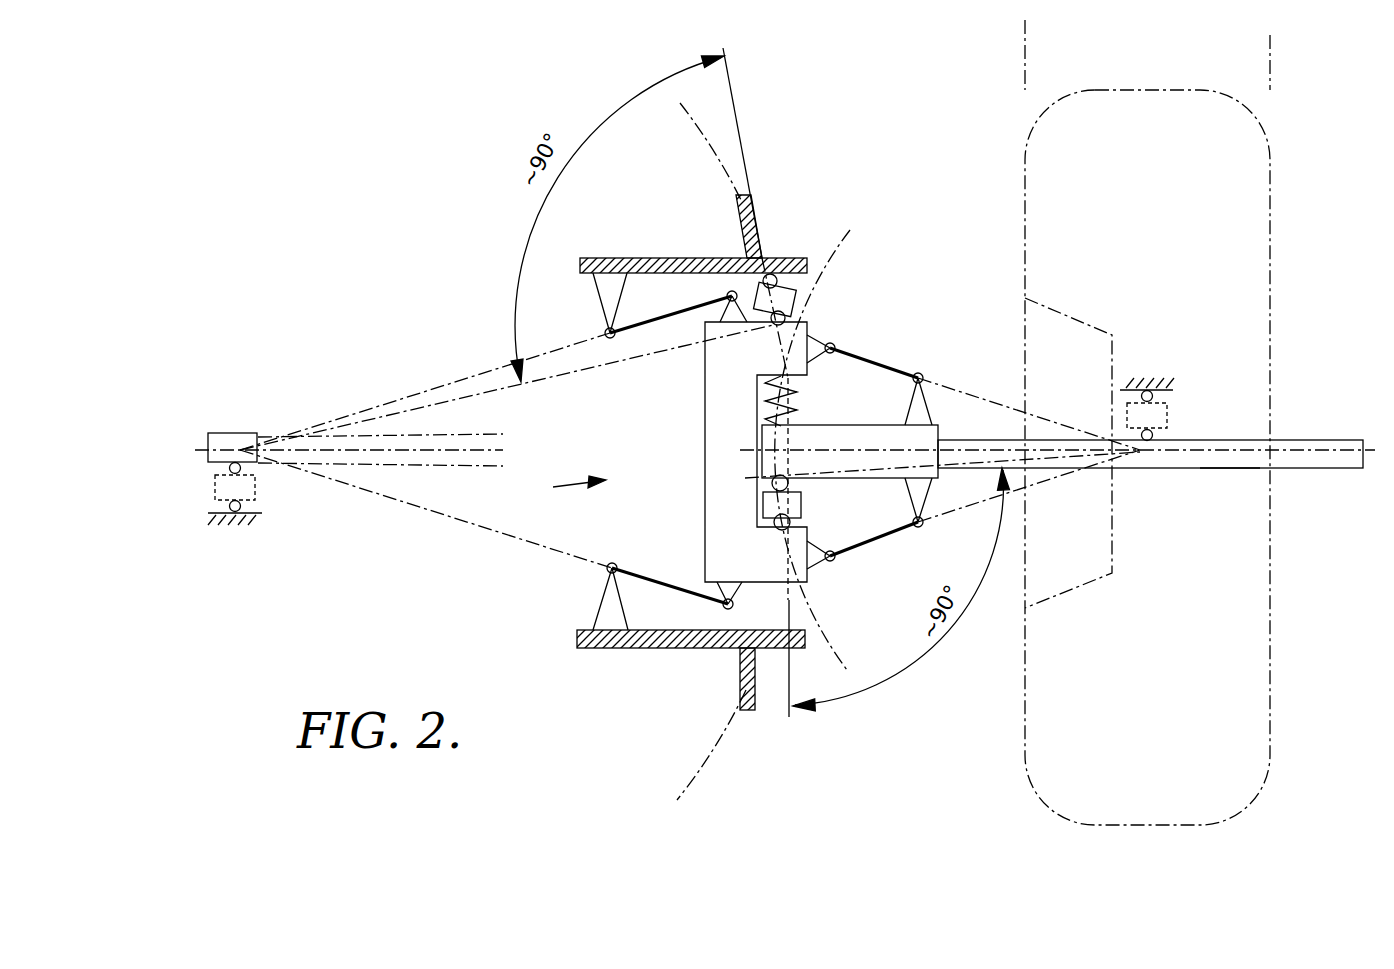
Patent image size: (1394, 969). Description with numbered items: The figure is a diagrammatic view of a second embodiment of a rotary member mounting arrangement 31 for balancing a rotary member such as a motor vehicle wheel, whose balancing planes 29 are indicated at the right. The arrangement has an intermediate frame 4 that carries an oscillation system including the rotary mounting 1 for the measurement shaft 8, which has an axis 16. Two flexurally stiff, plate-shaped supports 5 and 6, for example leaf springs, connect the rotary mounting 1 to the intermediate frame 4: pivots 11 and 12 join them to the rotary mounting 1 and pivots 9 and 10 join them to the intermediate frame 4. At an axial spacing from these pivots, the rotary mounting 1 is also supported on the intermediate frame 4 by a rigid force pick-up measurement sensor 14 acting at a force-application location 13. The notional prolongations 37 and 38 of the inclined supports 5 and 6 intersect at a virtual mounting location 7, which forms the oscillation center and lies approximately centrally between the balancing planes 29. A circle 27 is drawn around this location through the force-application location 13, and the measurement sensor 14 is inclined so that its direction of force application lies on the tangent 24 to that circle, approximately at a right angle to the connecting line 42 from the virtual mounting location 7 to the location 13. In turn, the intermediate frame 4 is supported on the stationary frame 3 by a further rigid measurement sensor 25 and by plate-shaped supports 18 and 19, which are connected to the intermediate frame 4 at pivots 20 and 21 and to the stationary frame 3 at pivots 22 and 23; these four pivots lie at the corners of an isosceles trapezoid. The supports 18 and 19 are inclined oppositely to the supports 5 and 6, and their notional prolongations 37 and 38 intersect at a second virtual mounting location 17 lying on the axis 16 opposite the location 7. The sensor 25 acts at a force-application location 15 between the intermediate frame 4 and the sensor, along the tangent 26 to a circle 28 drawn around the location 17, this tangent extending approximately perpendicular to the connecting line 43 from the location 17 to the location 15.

The rotary mounting 1 is at (832, 437).
The stationary frame 3 is at (668, 684).
The intermediate frame 4 is at (705, 405).
The support 5 is at (872, 361).
The support 6 is at (872, 542).
The virtual mounting location 7 is at (1145, 455).
The measurement shaft 8 is at (1230, 468).
The pivot 9 is at (832, 358).
The pivot 10 is at (831, 562).
The pivot 11 is at (923, 370).
The pivot 12 is at (918, 528).
The force-application location 13 is at (770, 481).
The measurement sensor 14 is at (762, 507).
The force-application location 15 is at (770, 330).
The axis 16 is at (1323, 468).
The virtual mounting location 17 is at (242, 442).
The support 18 is at (672, 312).
The support 19 is at (668, 583).
The pivot 20 is at (730, 290).
The pivot 21 is at (722, 606).
The pivot 22 is at (604, 332).
The pivot 23 is at (605, 570).
The tangent 24 is at (790, 677).
The measurement sensor 25 is at (792, 300).
The tangent 26 is at (746, 173).
The circle 27 is at (840, 244).
The circle 28 is at (718, 158).
The balancing planes 29 is at (1027, 55).
The rotary member mounting arrangement 31 is at (559, 487).
The notional prolongation 37 is at (393, 398).
The notional prolongation 38 is at (345, 485).
The connecting line 42 is at (882, 480).
The connecting line 43 is at (473, 396).